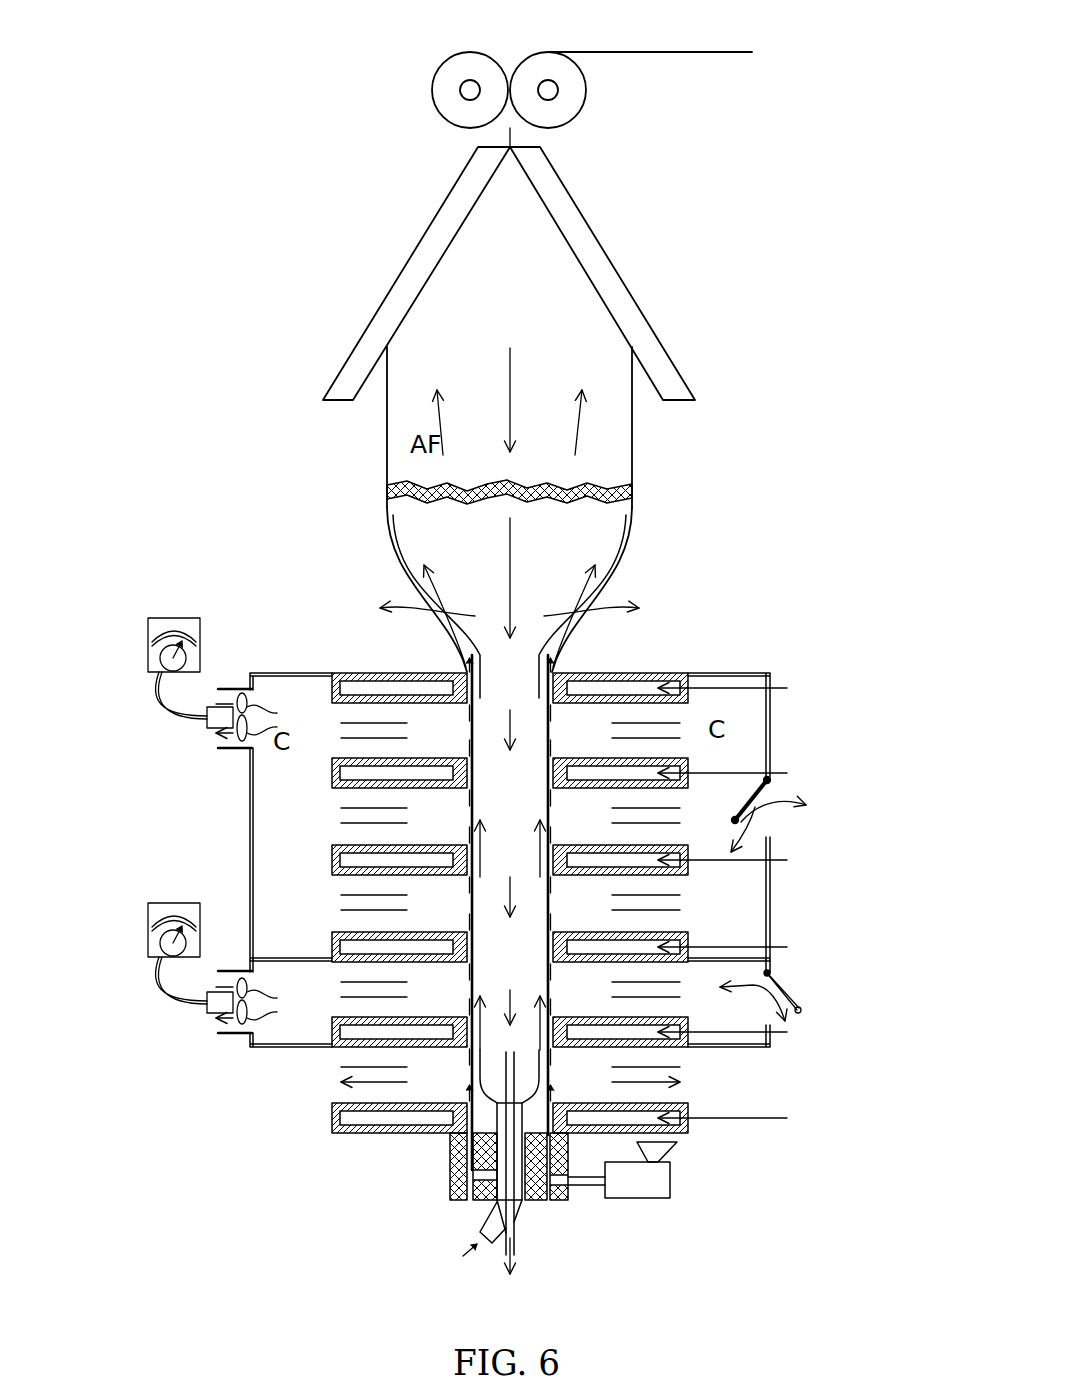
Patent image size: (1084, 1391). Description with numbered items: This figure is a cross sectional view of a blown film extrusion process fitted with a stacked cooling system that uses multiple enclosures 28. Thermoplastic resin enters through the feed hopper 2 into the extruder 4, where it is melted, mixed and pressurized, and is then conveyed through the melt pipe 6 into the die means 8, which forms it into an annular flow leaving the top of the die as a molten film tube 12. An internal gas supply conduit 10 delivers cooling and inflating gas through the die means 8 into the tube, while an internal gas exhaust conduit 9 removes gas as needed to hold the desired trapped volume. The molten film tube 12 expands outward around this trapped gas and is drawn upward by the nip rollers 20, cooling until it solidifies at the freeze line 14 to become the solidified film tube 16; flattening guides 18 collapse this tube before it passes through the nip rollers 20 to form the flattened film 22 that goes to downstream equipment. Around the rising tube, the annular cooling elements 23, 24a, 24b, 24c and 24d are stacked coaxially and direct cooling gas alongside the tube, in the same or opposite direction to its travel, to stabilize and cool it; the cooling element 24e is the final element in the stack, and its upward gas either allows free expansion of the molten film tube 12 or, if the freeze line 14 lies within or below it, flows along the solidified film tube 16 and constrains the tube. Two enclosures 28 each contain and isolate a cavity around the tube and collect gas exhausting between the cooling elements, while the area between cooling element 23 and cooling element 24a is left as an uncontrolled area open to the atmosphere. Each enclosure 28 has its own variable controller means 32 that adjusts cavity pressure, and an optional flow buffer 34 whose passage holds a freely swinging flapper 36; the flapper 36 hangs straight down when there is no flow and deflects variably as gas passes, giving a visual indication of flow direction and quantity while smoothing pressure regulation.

The feed hopper 2 is at (662, 1152).
The extruder 4 is at (650, 1185).
The melt pipe 6 is at (587, 1188).
The die means 8 is at (452, 1160).
The internal gas exhaust conduit 9 is at (515, 1242).
The internal gas supply conduit 10 is at (482, 1223).
The molten film tube 12 is at (630, 538).
The freeze line 14 is at (390, 492).
The solidified film tube 16 is at (632, 437).
The flattening guides 18 is at (617, 270).
The nip rollers 20 is at (583, 108).
The flattened film 22 is at (597, 48).
The cooling element 23 is at (353, 1118).
The divergent cooling element 24a is at (352, 1035).
The divergent cooling element 24b is at (348, 943).
The divergent cooling element 24c is at (353, 860).
The divergent cooling element 24d is at (352, 775).
The cooling element 24e is at (357, 685).
The enclosure 28 is at (253, 1047).
The variable controller means 32 is at (148, 948).
The flow buffer 34 is at (814, 860).
The freely swinging flapper 36 is at (775, 977).